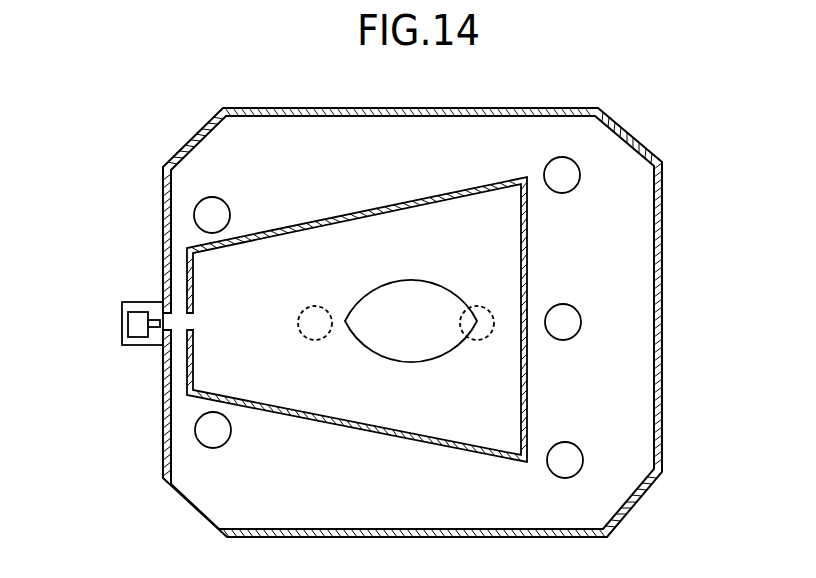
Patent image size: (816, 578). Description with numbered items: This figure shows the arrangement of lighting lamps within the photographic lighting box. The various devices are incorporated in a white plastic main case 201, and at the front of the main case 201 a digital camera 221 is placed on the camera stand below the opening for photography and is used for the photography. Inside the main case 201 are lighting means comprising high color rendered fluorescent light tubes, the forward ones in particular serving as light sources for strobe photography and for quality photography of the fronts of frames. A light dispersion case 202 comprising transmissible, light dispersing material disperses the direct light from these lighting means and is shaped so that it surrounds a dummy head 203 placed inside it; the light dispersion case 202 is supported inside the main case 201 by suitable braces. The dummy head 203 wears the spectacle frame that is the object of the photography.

The main case 201 is at (662, 328).
The light dispersion case 202 is at (392, 435).
The dummy head 203 is at (403, 281).
The digital camera 221 is at (122, 328).